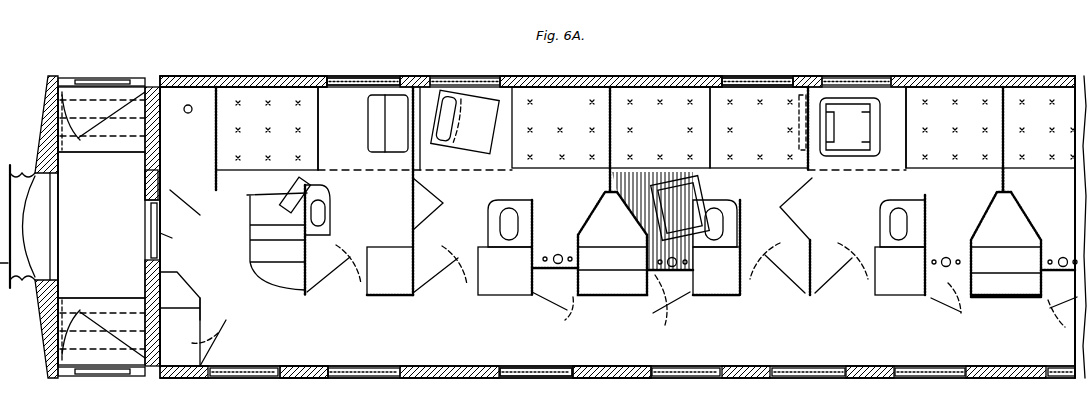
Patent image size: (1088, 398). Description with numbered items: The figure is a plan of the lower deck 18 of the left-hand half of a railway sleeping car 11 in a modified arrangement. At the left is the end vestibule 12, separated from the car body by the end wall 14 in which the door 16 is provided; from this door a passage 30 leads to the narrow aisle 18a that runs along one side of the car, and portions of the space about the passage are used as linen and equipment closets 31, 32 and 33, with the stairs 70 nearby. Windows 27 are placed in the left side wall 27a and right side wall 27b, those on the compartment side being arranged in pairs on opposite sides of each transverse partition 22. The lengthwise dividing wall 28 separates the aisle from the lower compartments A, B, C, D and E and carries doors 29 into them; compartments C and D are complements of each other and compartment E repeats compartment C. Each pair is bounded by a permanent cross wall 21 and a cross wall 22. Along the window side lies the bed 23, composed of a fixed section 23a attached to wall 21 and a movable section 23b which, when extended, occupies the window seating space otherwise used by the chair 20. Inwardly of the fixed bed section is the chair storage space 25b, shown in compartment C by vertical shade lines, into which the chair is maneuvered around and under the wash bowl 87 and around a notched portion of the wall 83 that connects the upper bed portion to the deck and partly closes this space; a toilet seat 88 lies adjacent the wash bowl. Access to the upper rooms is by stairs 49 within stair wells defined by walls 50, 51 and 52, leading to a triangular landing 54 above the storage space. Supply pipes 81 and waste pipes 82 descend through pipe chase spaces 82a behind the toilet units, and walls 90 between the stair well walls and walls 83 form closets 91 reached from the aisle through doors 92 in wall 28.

The car 11 is at (308, 82).
The end vestibule 12 is at (101, 225).
The end wall 14 is at (148, 170).
The door 16 is at (150, 238).
The main floor or deck 18 is at (617, 343).
The aisle 18a is at (758, 362).
The chair 20 is at (290, 195).
The cross dividing wall 21 is at (608, 148).
The cross dividing wall 22 is at (420, 240).
The bed 23 is at (696, 80).
The fixed section 23a is at (660, 127).
The movable section 23b is at (318, 114).
The chair storage space 25b is at (630, 195).
The window 27 is at (372, 80).
The left side wall 27a is at (256, 82).
The right side wall 27b is at (308, 368).
The lengthwise dividing wall 28 is at (396, 297).
The door 29 is at (325, 280).
The passage 30 is at (190, 272).
The closet 31 is at (188, 84).
The closet 32 is at (208, 300).
The closet 33 is at (208, 355).
The stairs 49 is at (1008, 298).
The stair well wall 50 is at (580, 234).
The stair well wall 51 is at (676, 258).
The stair well wall 52 is at (1042, 258).
The landing 54 is at (1004, 201).
The stairs 70 is at (285, 275).
The supply pipe 81 is at (570, 256).
The waste pipe 82 is at (188, 114).
The pipe chase space 82a is at (634, 277).
The wall 83 is at (533, 212).
The wash bowl 87 is at (332, 213).
The toilet seat 88 is at (748, 238).
The closet wall 90 is at (548, 270).
The closet 91 is at (700, 294).
The closet door 92 is at (550, 303).
The lower compartment A is at (266, 209).
The lower compartment B is at (474, 188).
The lower compartment C is at (760, 208).
The lower compartment D is at (853, 208).
The lower compartment E is at (1050, 188).